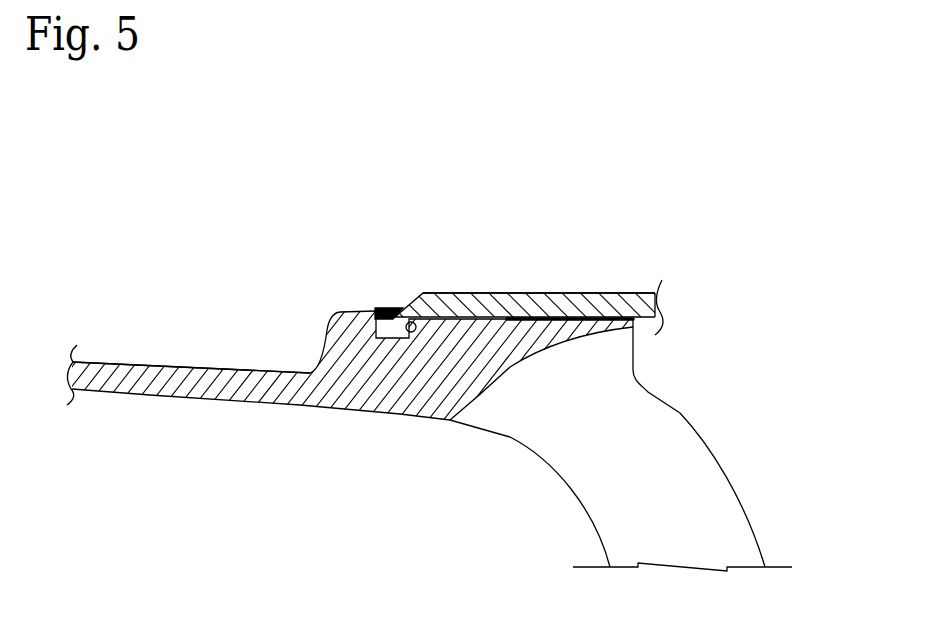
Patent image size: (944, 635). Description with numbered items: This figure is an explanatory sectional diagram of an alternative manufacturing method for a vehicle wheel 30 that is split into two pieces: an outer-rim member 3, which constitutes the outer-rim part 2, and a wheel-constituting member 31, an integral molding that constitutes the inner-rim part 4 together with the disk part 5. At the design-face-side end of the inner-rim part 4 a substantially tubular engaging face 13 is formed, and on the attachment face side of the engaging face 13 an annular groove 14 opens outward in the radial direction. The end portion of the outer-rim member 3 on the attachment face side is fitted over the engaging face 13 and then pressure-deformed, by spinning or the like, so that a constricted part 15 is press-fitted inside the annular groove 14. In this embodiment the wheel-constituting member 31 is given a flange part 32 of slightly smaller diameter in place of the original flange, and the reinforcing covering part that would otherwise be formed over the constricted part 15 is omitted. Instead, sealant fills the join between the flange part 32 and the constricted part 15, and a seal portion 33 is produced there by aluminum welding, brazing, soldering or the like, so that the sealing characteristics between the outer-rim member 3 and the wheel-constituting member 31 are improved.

The outer-rim part 2 is at (548, 292).
The outer-rim member 3 is at (633, 268).
The inner-rim part 4 is at (130, 362).
The disk part 5 is at (764, 468).
The engaging face 13 is at (475, 318).
The annular groove 14 is at (415, 332).
The constricted part 15 is at (378, 337).
The wheel 30 is at (736, 203).
The wheel-constituting member 31 is at (174, 264).
The flange part 32 is at (346, 309).
The seal portion 33 is at (385, 307).